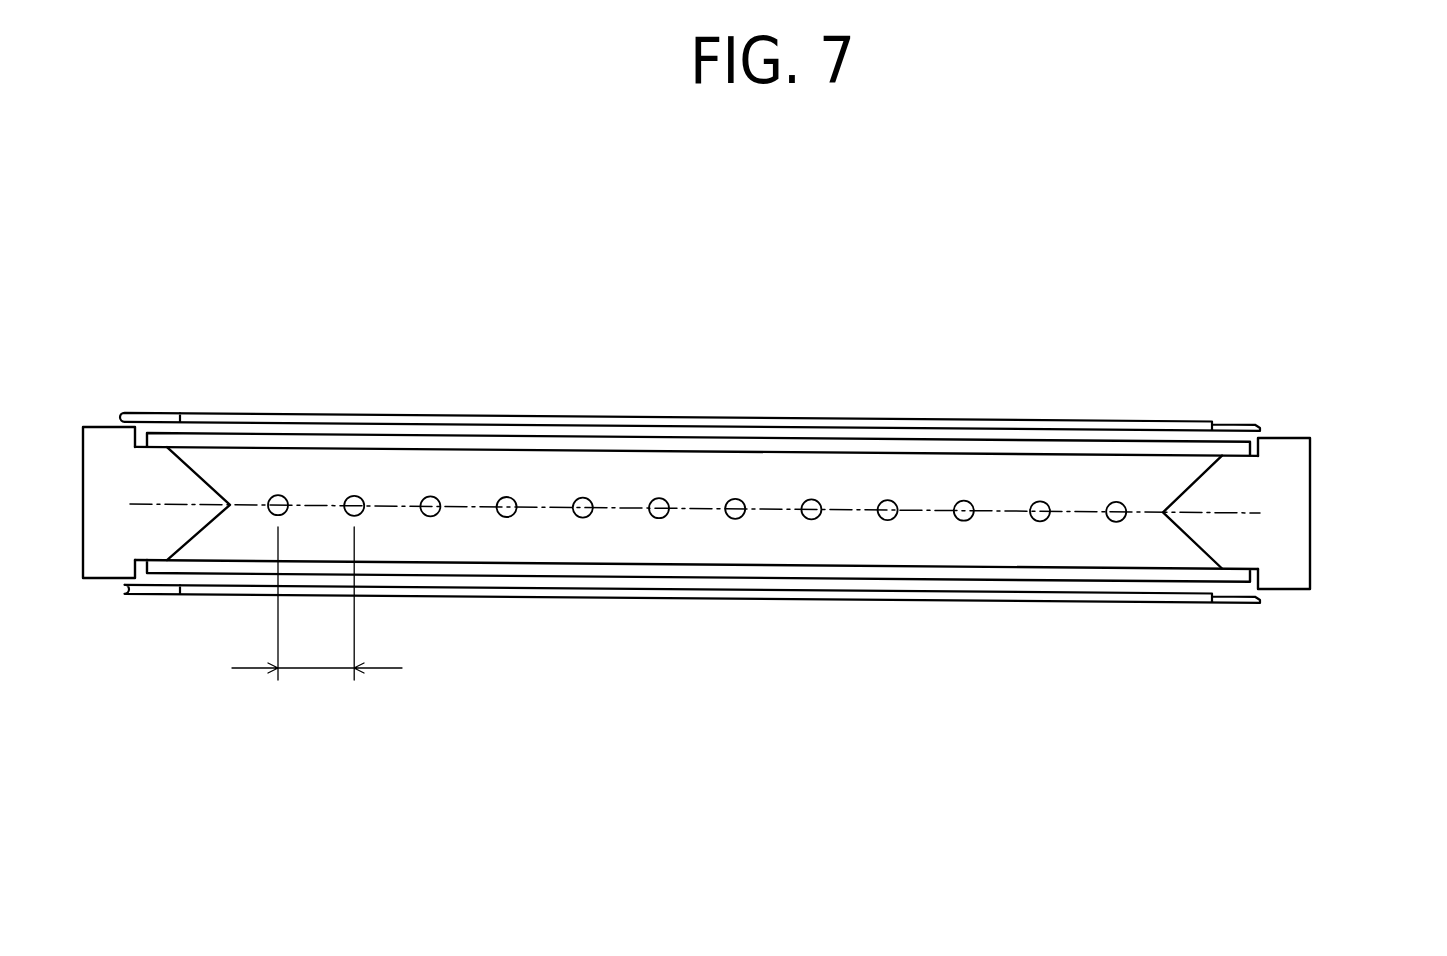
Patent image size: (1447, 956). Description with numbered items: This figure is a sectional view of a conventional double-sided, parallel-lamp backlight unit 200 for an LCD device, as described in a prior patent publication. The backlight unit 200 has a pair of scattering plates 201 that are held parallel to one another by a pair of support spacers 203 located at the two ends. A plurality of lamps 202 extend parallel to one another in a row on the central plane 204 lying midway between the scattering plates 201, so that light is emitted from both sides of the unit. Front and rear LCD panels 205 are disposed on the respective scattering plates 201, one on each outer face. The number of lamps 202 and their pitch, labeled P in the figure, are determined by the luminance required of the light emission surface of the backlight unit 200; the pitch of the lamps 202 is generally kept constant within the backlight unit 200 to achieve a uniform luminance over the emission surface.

The double-sided backlight unit 200 is at (750, 497).
The scattering plate 201 is at (802, 438).
The lamp 202 is at (653, 499).
The support spacer 203 is at (103, 427).
The central plane 204 is at (1214, 518).
The LCD panel 205 is at (978, 418).